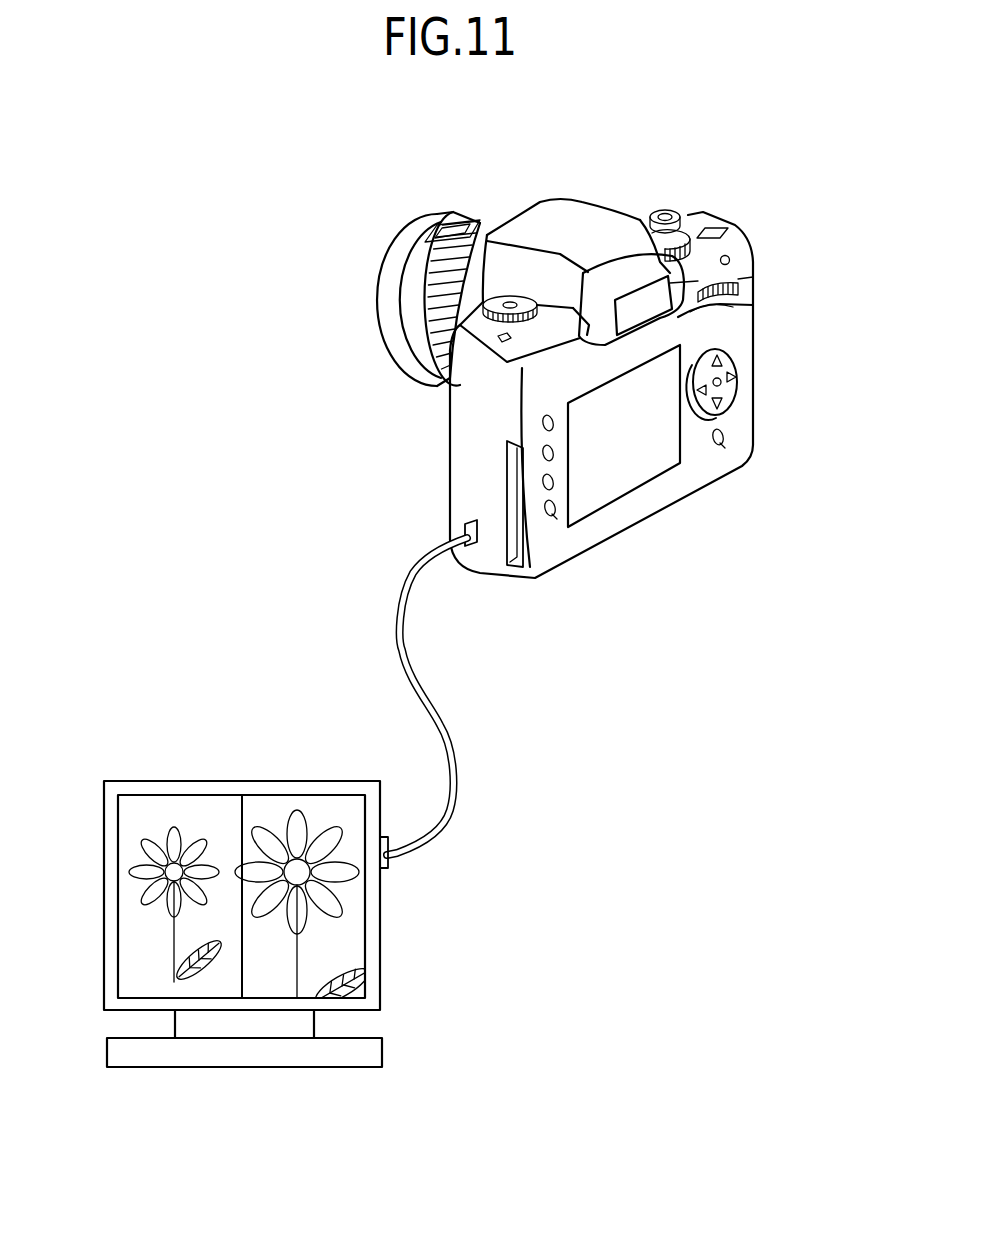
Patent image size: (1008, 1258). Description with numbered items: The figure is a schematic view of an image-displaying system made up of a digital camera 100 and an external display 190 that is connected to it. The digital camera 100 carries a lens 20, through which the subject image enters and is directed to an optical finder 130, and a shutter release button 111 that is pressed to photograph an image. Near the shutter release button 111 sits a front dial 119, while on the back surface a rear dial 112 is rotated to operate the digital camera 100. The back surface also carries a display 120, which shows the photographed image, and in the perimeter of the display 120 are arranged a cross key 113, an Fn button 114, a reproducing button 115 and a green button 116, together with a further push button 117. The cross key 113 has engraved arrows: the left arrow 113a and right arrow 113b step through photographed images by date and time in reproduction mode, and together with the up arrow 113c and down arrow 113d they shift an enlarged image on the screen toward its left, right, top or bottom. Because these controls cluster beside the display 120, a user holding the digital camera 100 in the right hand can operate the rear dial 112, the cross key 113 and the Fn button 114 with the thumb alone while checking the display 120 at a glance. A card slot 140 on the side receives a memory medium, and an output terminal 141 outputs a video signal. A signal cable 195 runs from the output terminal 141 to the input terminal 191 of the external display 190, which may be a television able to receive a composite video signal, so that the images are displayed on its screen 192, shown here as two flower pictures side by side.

The lens 20 is at (411, 216).
The digital camera 100 is at (740, 219).
The shutter release button 111 is at (664, 208).
The rear dial 112 is at (753, 282).
The cross key 113 is at (736, 393).
The left arrow 113a is at (722, 411).
The right arrow 113b is at (736, 381).
The up arrow 113c is at (723, 350).
The down arrow 113d is at (730, 402).
The Fn button 114 is at (723, 446).
The reproducing button 115 is at (552, 520).
The green button 116 is at (543, 451).
The push button 117 is at (736, 362).
The front dial 119 is at (643, 227).
The display 120 is at (640, 462).
The optical finder 130 is at (733, 309).
The card slot 140 is at (517, 562).
The output terminal 141 is at (468, 548).
The external display 190 is at (150, 772).
The input terminal 191 is at (387, 870).
The screen 192 is at (118, 982).
The signal cable 195 is at (455, 816).